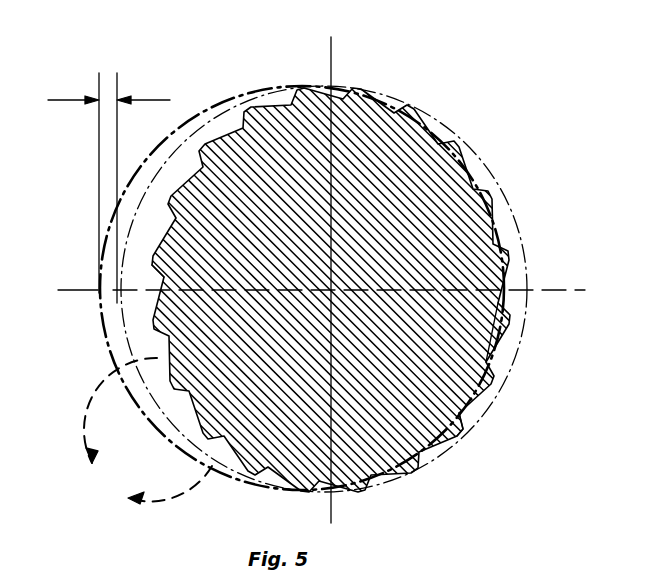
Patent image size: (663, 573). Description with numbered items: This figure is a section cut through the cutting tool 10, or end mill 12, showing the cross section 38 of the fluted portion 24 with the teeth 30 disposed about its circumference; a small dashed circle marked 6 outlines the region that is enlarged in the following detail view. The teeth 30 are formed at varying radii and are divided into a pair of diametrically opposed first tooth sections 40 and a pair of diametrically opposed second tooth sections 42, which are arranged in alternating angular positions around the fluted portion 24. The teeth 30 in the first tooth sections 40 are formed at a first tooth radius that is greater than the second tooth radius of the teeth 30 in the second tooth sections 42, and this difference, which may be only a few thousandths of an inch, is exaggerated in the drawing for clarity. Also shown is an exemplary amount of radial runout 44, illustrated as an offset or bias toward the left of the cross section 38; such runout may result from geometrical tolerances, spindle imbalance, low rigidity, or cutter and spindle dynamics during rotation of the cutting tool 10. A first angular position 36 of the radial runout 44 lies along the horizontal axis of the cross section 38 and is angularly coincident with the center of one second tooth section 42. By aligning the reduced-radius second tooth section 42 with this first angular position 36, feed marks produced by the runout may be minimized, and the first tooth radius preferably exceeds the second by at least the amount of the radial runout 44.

The cutting tool 10 is at (513, 78).
The end mill 12 is at (514, 76).
The fluted portion 24 is at (538, 190).
The teeth 30 is at (329, 80).
The first angular position 36 is at (80, 289).
The cross section 38 is at (463, 442).
The first tooth sections 40 is at (297, 87).
The second tooth sections 42 is at (162, 322).
The radial runout 44 is at (106, 92).
The detail view circle 6 is at (148, 431).